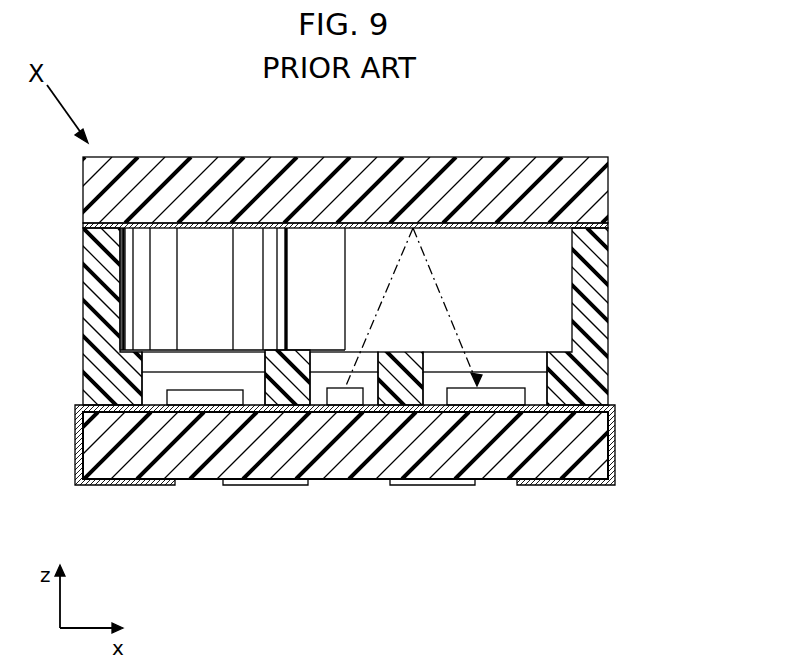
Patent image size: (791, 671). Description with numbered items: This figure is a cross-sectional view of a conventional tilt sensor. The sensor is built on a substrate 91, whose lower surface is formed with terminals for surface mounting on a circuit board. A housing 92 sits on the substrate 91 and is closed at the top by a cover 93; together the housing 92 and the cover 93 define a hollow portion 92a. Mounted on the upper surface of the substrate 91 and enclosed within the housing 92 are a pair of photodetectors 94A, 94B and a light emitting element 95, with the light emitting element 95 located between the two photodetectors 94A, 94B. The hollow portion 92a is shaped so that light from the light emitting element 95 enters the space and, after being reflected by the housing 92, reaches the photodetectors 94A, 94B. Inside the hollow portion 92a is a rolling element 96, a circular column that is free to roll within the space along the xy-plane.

The substrate 91 is at (593, 440).
The housing 92 is at (597, 310).
The hollow portion 92a is at (465, 245).
The cover 93 is at (597, 200).
The photodetector 94A is at (211, 396).
The photodetector 94B is at (485, 380).
The light emitting element 95 is at (340, 400).
The rolling element 96 is at (213, 250).